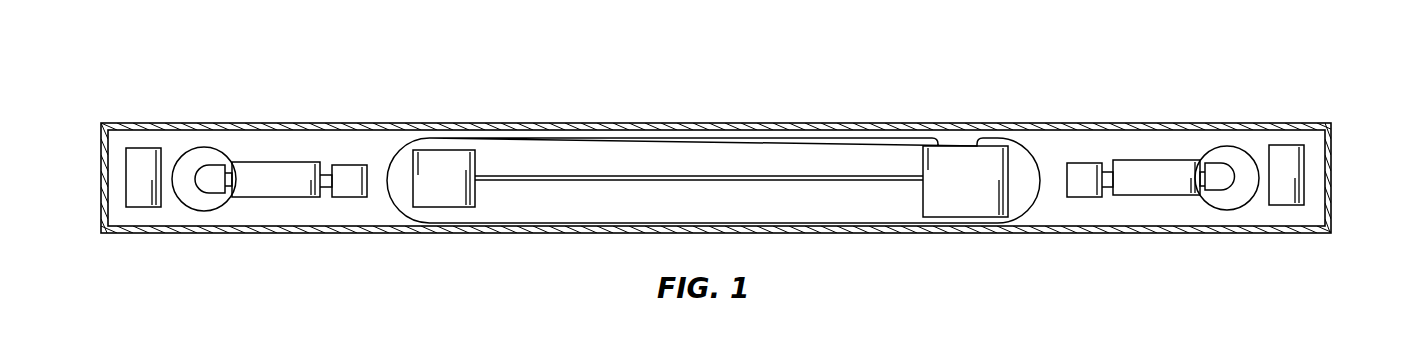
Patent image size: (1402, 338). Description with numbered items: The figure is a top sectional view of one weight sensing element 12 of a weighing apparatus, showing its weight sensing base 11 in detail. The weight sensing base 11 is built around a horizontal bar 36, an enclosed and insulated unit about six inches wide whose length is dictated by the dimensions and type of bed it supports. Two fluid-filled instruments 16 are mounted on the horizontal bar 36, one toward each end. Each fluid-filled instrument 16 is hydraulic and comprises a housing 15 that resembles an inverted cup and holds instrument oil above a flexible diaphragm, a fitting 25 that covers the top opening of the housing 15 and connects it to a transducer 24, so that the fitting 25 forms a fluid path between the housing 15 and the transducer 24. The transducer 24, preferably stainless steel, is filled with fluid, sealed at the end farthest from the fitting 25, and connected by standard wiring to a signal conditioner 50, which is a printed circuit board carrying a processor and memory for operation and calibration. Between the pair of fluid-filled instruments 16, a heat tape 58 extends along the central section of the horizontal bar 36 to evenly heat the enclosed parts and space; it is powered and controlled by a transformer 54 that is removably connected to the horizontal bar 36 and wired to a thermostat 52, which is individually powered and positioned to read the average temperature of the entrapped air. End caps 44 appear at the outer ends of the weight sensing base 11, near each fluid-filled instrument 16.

The weight sensing base 11 is at (587, 235).
The weight sensing element 12 is at (992, 250).
The housing 15 is at (223, 207).
The fluid-filled instrument 16 is at (210, 153).
The transducer 24 is at (278, 172).
The fitting 25 is at (208, 178).
The horizontal bar 36 is at (535, 122).
The end cap 44 is at (143, 153).
The signal conditioner 50 is at (347, 177).
The thermostat 52 is at (445, 157).
The transformer 54 is at (963, 153).
The heat tape 58 is at (658, 145).